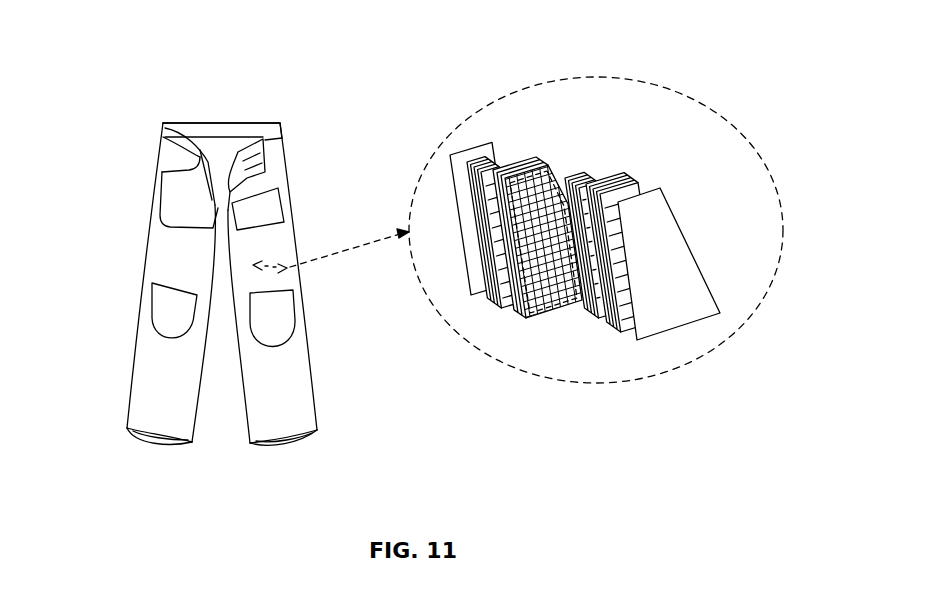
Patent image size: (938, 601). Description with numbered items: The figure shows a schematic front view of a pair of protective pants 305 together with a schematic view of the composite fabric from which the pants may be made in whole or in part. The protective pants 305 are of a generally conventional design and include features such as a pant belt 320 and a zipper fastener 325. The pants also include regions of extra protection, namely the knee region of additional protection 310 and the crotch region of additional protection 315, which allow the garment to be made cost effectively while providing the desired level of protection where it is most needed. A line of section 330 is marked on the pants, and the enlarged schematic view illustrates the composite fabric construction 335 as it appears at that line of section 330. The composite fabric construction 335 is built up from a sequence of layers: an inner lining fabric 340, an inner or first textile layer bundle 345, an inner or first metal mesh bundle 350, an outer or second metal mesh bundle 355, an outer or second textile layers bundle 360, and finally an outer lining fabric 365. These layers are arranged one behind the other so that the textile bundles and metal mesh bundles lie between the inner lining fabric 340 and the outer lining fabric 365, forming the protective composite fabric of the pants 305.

The protective pants 305 is at (215, 510).
The knee region of additional protection 310 is at (148, 308).
The crotch region of additional protection 315 is at (163, 197).
The pant belt 320 is at (167, 122).
The zipper fastener 325 is at (245, 172).
The line of section 330 is at (268, 266).
The composite fabric construction 335 is at (630, 382).
The inner lining fabric 340 is at (447, 165).
The first textile layer bundle 345 is at (500, 152).
The first metal mesh bundle 350 is at (515, 178).
The second metal mesh bundle 355 is at (580, 175).
The second textile layers bundle 360 is at (647, 183).
The outer lining fabric 365 is at (702, 264).